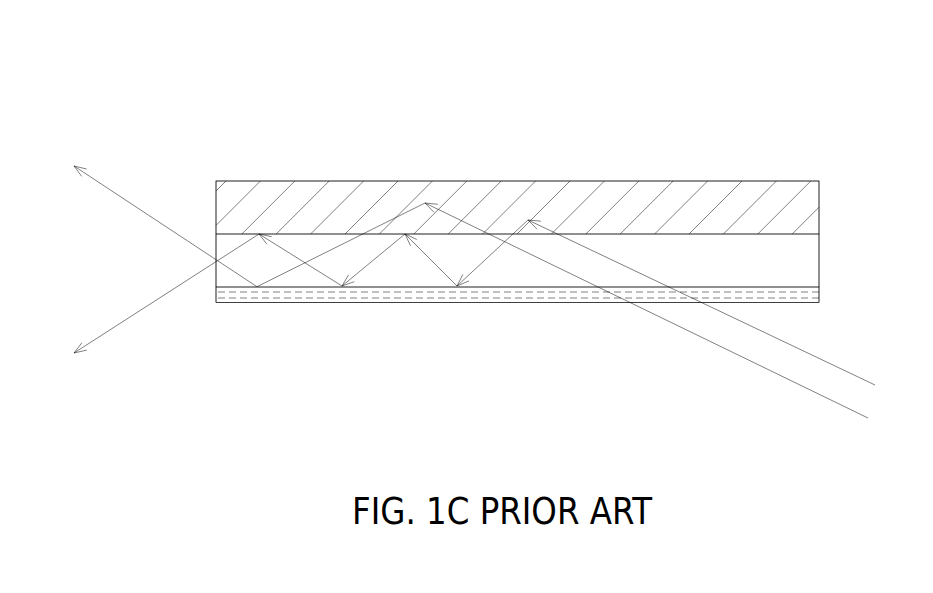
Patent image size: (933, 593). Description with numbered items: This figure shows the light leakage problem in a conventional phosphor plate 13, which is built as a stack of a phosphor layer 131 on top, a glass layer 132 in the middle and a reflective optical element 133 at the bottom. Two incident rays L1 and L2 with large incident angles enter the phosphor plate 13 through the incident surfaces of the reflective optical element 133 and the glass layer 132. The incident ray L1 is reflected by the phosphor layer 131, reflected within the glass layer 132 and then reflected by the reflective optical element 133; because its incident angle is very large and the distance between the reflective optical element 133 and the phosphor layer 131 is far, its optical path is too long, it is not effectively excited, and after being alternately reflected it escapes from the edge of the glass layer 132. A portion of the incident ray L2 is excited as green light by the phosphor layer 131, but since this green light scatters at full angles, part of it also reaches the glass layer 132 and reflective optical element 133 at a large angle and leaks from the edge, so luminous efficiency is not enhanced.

The phosphor plate 13 is at (884, 71).
The phosphor layer 131 is at (807, 203).
The glass layer 132 is at (808, 257).
The reflective optical element 133 is at (815, 297).
The incident ray L1 is at (491, 310).
The incident ray L2 is at (491, 302).